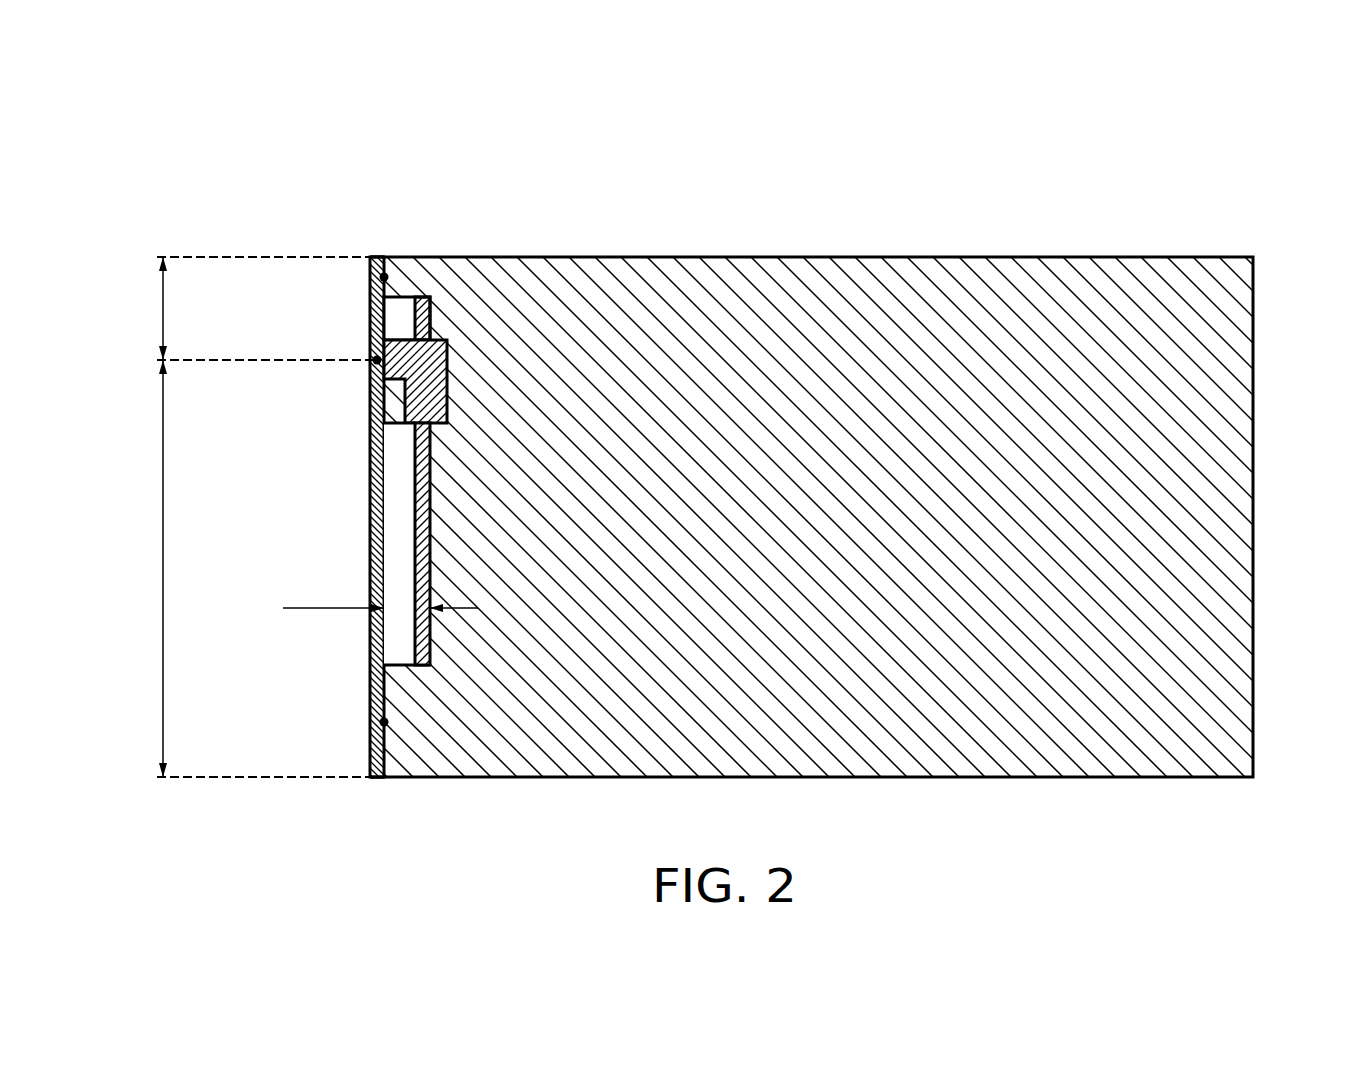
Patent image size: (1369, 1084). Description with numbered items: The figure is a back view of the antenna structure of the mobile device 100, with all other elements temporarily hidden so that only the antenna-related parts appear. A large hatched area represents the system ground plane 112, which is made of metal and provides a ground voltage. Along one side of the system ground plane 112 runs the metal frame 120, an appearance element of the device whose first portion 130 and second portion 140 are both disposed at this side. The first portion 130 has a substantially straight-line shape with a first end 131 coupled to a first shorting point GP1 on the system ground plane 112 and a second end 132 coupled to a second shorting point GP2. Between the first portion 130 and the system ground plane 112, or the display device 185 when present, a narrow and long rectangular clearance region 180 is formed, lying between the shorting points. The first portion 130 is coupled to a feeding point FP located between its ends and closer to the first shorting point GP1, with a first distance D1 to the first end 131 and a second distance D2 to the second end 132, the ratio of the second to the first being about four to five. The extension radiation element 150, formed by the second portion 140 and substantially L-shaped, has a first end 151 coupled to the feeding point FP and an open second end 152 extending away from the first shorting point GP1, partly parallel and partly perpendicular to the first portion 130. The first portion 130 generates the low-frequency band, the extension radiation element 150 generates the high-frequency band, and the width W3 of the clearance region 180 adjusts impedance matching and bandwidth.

The mobile device 100 is at (118, 127).
The system ground plane 112 is at (1238, 497).
The metal frame 120 is at (1222, 103).
The first portion 130 is at (372, 508).
The first end 131 is at (370, 269).
The second end 132 is at (370, 768).
The second portion 140 is at (369, 431).
The extension radiation element 150 is at (369, 431).
The first end 151 is at (408, 270).
The second end 152 is at (420, 427).
The clearance region 180 is at (400, 543).
The display device 185 is at (432, 318).
The first shorting point GP1 is at (384, 277).
The second shorting point GP2 is at (384, 722).
The feeding point FP is at (393, 353).
The first distance D1 is at (243, 308).
The second distance D2 is at (243, 568).
The width W3 is at (380, 593).